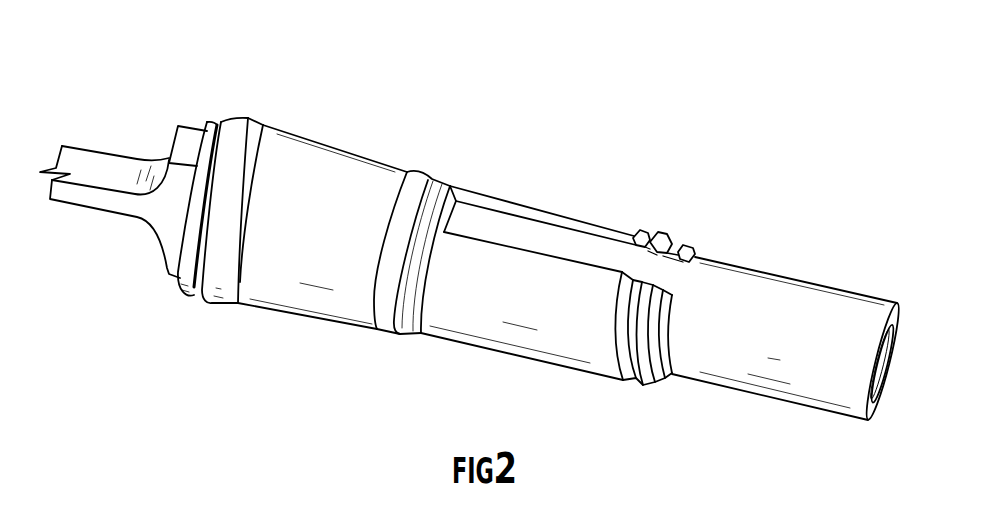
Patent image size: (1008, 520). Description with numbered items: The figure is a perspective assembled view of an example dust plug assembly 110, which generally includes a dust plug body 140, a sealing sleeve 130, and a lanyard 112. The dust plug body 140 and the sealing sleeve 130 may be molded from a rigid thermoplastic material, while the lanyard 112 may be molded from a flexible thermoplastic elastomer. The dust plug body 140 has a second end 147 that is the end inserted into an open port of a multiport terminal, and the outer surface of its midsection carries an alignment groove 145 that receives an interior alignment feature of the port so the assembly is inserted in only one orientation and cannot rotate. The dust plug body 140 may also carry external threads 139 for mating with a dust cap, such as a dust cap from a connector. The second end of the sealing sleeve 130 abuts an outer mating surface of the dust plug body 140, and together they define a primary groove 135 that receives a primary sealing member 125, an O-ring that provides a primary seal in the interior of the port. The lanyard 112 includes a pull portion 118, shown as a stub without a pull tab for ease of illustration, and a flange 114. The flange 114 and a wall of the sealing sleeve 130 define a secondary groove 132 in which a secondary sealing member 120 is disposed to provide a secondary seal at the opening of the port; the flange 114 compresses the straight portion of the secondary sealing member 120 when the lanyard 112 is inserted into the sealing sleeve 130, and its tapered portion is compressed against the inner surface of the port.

The dust plug assembly 110 is at (259, 66).
The lanyard 112 is at (98, 229).
The pull portion 118 is at (80, 157).
The flange 114 is at (186, 287).
The secondary sealing member 120 is at (217, 319).
The sealing sleeve 130 is at (329, 336).
The secondary groove 132 is at (263, 127).
The primary groove 135 is at (445, 176).
The primary sealing member 125 is at (412, 339).
The dust plug body 140 is at (565, 386).
The alignment groove 145 is at (530, 237).
The external threads 139 is at (683, 245).
The second end 147 is at (775, 368).